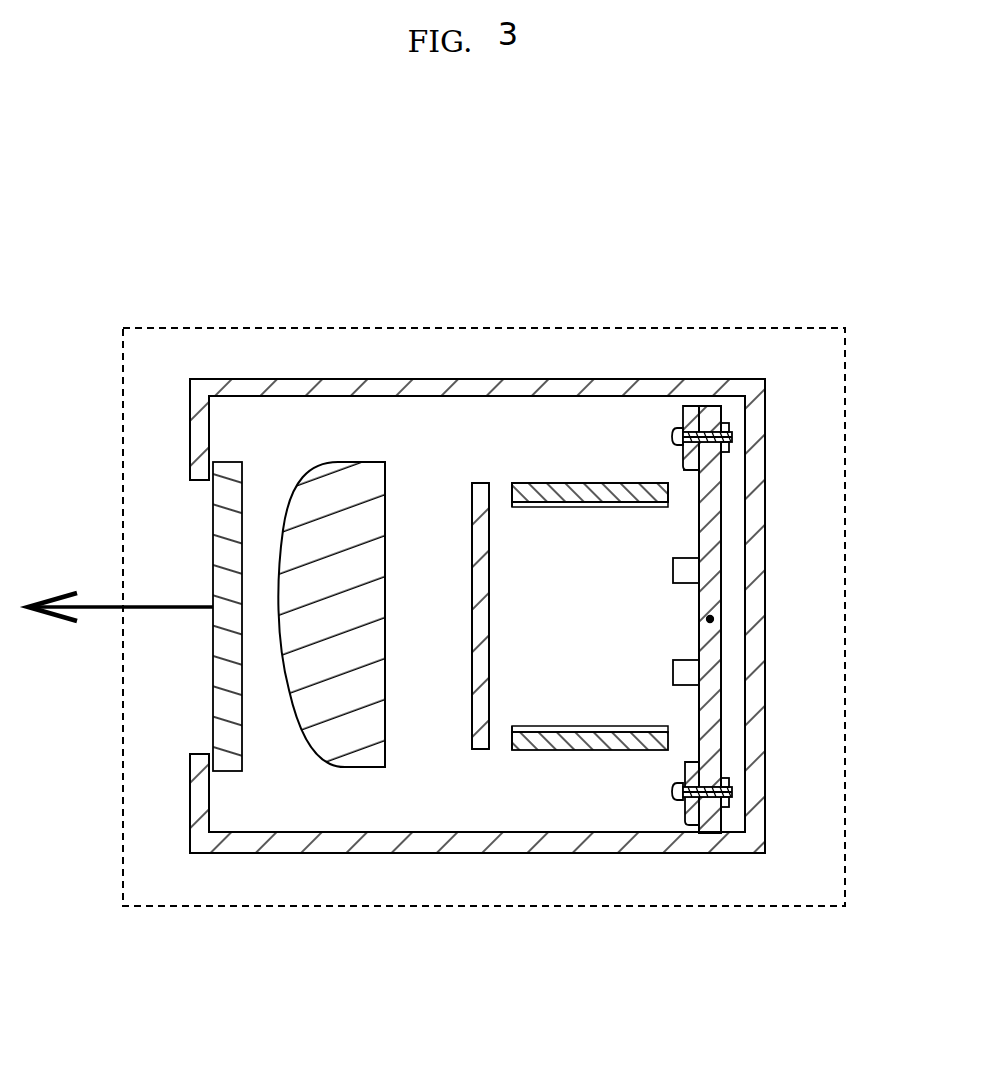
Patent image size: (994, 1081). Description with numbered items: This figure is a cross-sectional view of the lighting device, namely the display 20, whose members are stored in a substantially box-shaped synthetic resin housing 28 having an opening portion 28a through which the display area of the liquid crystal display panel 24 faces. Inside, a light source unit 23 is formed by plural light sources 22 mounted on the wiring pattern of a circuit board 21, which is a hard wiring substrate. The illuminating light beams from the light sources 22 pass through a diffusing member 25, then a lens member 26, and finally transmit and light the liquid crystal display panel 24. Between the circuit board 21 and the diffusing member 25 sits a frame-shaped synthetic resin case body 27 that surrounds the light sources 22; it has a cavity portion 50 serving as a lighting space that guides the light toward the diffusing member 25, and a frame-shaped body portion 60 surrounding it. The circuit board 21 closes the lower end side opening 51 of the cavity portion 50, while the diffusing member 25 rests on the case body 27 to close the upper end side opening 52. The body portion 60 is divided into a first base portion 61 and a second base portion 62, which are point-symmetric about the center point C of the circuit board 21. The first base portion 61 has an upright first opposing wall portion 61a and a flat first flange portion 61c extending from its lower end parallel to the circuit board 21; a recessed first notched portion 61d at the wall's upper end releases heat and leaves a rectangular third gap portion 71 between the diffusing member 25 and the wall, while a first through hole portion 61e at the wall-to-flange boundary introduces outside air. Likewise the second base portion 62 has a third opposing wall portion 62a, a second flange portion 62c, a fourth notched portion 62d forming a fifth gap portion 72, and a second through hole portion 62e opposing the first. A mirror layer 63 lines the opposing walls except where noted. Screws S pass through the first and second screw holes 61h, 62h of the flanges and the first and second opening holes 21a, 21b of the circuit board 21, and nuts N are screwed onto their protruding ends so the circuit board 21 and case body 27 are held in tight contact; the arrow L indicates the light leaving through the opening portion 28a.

The display 20 is at (596, 327).
The circuit board 21 is at (715, 553).
The first opening hole 21a is at (730, 803).
The second opening hole 21b is at (715, 429).
The light source 22 is at (687, 672).
The light source unit 23 is at (754, 619).
The liquid crystal display panel 24 is at (225, 690).
The diffusing member 25 is at (480, 690).
The lens member 26 is at (313, 733).
The case body 27 is at (532, 579).
The housing 28 is at (394, 848).
The opening portion 28a is at (188, 493).
The cavity portion 50 is at (482, 614).
The lower end side opening 51 is at (658, 642).
The upper end side opening 52 is at (520, 617).
The body portion 60 is at (547, 482).
The first base portion 61 is at (642, 810).
The first opposing wall portion 61a is at (567, 750).
The first flange portion 61c is at (695, 825).
The first notched portion 61d is at (508, 750).
The first through hole portion 61e is at (685, 743).
The first screw hole 61h is at (688, 800).
The second base portion 62 is at (634, 431).
The third opposing wall portion 62a is at (603, 488).
The second flange portion 62c is at (692, 413).
The fourth notched portion 62d is at (508, 493).
The second through hole portion 62e is at (687, 493).
The second screw hole 62h is at (682, 447).
The mirror layer 63 is at (563, 507).
The third gap portion 71 is at (485, 745).
The fifth gap portion 72 is at (493, 495).
The center point C is at (703, 617).
The light L is at (163, 603).
The nut N is at (724, 453).
The screw S is at (732, 440).